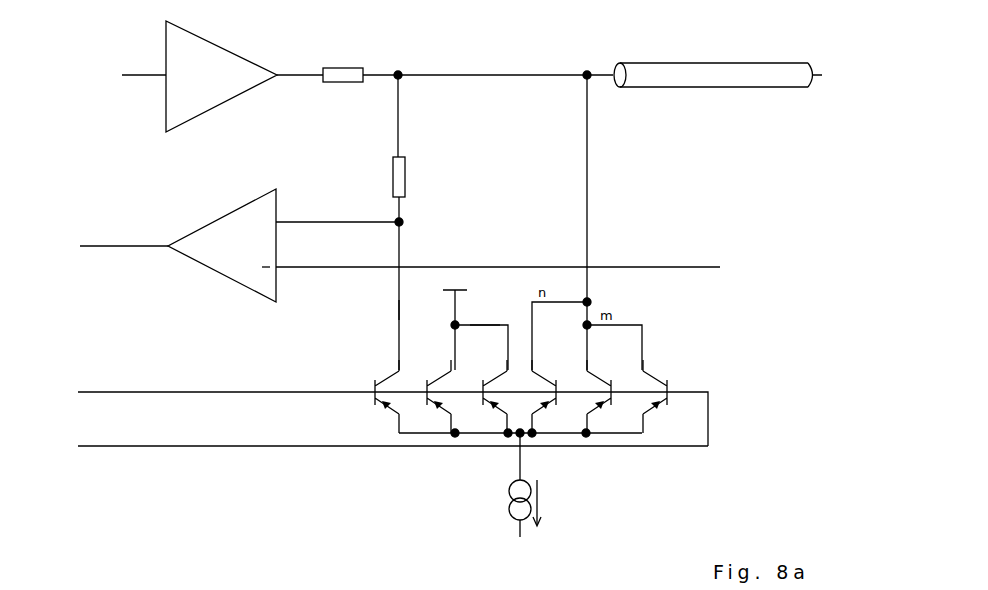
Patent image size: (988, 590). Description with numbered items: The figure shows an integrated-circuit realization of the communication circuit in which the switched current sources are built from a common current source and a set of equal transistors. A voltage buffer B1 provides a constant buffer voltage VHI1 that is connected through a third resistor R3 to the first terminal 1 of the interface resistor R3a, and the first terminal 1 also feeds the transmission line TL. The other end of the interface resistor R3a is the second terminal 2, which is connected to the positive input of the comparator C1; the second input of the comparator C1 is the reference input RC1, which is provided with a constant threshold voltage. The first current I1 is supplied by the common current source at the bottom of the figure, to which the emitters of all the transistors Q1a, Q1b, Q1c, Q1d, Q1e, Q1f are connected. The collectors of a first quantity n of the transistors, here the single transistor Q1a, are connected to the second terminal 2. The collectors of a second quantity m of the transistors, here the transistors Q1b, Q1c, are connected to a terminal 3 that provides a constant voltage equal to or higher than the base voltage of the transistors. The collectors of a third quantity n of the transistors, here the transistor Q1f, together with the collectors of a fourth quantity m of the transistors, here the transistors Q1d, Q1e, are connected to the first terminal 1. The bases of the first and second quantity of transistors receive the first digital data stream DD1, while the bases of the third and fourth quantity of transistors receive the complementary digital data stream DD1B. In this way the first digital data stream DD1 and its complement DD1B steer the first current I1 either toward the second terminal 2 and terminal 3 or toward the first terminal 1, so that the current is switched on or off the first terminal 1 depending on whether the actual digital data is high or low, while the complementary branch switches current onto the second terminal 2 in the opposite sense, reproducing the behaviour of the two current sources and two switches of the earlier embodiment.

The first terminal 1 is at (404, 67).
The second terminal 2 is at (410, 226).
The terminal 3 is at (475, 325).
The voltage buffer B1 is at (221, 76).
The comparator C1 is at (222, 245).
The third resistor R3 is at (343, 63).
The interface resistor R3a is at (375, 177).
The transmission line TL is at (718, 63).
The first current I1 is at (539, 485).
The transistor Q1a is at (375, 390).
The transistor Q1b is at (429, 390).
The transistor Q1c is at (485, 390).
The transistor Q1d is at (664, 390).
The transistor Q1e is at (608, 390).
The transistor Q1f is at (554, 390).
The buffer voltage VHI1 is at (111, 76).
The reference input RC1 is at (102, 247).
The first digital data stream DD1 is at (372, 415).
The complementary digital data stream DD1B is at (361, 447).
The first quantity n is at (406, 309).
The second quantity m is at (485, 317).